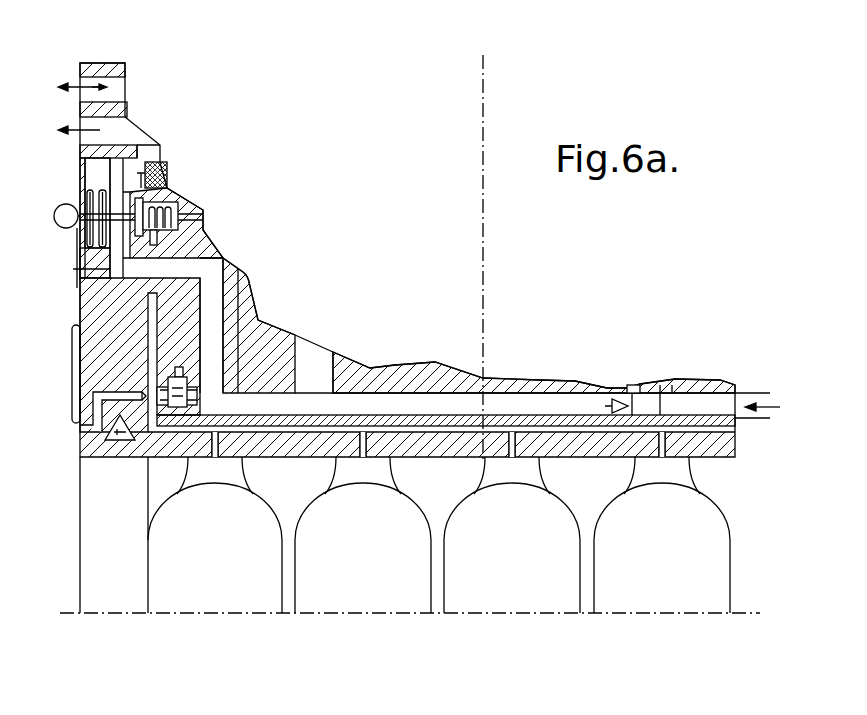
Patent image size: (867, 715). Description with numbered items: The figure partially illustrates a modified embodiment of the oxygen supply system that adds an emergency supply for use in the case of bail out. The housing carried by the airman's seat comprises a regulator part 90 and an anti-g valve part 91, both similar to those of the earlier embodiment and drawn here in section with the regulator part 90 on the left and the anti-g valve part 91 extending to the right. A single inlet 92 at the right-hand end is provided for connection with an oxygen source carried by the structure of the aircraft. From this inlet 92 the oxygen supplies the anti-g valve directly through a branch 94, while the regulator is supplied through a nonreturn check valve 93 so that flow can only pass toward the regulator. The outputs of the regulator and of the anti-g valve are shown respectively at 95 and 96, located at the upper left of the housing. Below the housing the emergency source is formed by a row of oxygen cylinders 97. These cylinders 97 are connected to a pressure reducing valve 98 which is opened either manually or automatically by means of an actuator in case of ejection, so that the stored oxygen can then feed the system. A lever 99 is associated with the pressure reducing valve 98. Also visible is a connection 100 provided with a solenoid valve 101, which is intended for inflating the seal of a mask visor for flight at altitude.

The regulator part 90 is at (483, 57).
The anti-g valve part 91 is at (737, 366).
The inlet 92 is at (718, 405).
The nonreturn check valve 93 is at (630, 407).
The branch 94 is at (732, 428).
The output of the regulator 95 is at (110, 136).
The output of the anti-g valve 96 is at (105, 82).
The oxygen cylinders 97 is at (260, 580).
The pressure reducing valve 98 is at (138, 234).
The adjusting lever 99 is at (63, 222).
The connection 100 is at (80, 428).
The solenoid valve 101 is at (168, 383).